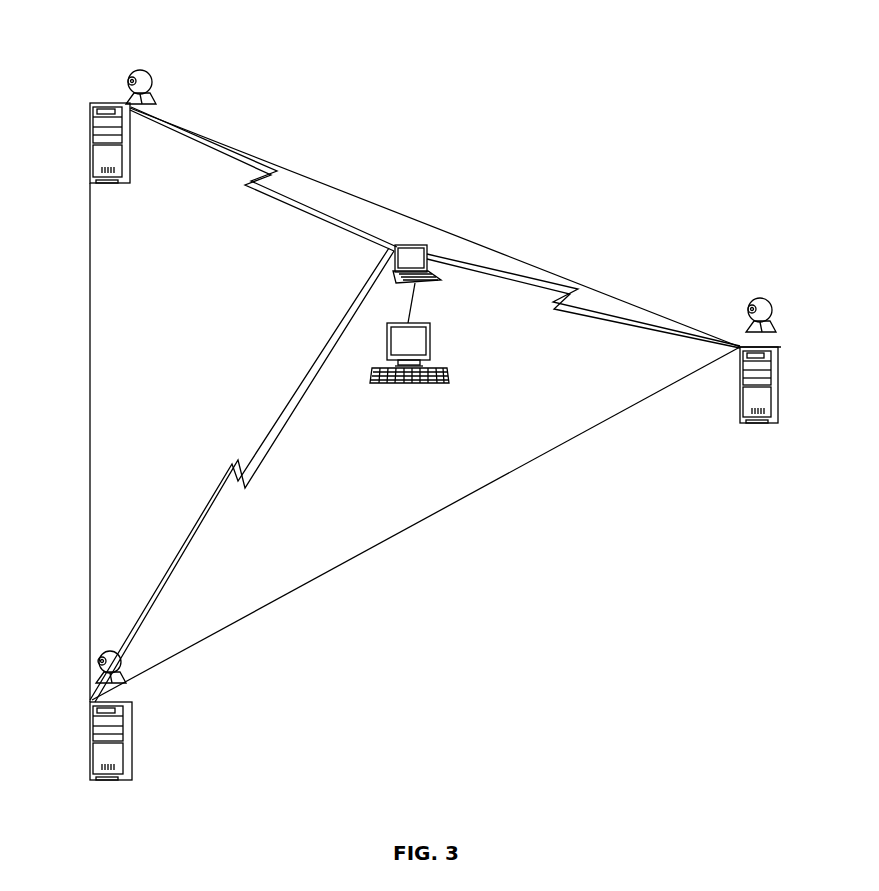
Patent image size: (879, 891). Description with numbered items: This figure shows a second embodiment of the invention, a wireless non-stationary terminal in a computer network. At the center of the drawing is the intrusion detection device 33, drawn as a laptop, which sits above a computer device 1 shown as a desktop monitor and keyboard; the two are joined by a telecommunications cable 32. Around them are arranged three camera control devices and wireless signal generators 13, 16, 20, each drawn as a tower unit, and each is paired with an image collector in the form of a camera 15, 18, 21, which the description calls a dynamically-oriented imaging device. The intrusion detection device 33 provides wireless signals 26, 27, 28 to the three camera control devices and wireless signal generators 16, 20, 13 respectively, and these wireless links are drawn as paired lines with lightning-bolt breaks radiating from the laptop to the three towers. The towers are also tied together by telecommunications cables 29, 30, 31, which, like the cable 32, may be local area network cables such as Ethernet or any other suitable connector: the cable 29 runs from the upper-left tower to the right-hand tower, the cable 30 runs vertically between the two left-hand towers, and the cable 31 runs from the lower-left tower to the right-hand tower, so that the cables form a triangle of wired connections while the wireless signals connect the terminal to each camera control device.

The computer device 1 is at (423, 322).
The camera control device and wireless signal generator 13 is at (740, 423).
The camera 15 is at (753, 302).
The camera control device and wireless signal generator 16 is at (90, 143).
The camera 18 is at (155, 77).
The camera control device and wireless signal generator 20 is at (132, 737).
The camera 21 is at (110, 657).
The wireless signal 26 is at (243, 182).
The wireless signal 27 is at (263, 448).
The wireless signal 28 is at (493, 263).
The telecommunications cable 29 is at (357, 198).
The telecommunications cable 30 is at (90, 264).
The telecommunications cable 31 is at (563, 447).
The telecommunications cable 32 is at (416, 299).
The intrusion detection device 33 is at (413, 246).